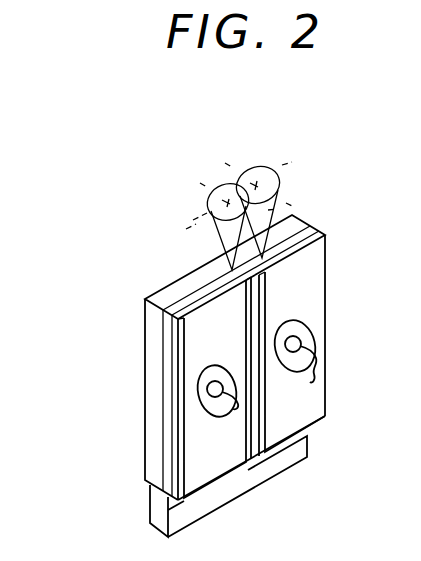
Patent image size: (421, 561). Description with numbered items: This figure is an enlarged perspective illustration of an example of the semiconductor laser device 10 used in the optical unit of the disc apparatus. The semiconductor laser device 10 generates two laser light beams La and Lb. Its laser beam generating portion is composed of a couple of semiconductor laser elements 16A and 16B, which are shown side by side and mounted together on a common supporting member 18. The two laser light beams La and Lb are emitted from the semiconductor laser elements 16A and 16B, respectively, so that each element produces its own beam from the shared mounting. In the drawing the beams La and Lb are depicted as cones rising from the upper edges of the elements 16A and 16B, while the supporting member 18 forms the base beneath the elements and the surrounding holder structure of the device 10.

The semiconductor laser device 10 is at (118, 376).
The semiconductor laser element 16A is at (205, 448).
The semiconductor laser element 16B is at (313, 291).
The common supporting member 18 is at (152, 515).
The laser light beam La is at (222, 234).
The laser light beam Lb is at (282, 206).